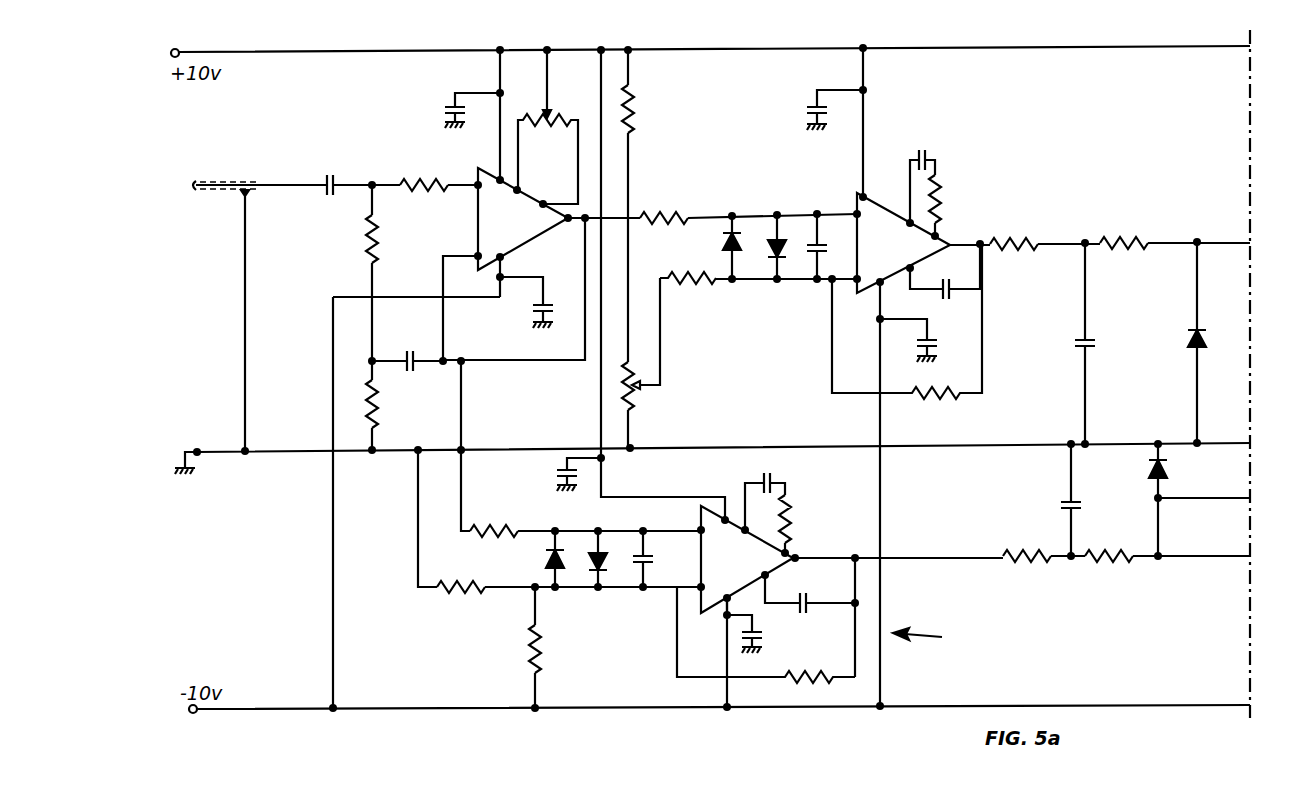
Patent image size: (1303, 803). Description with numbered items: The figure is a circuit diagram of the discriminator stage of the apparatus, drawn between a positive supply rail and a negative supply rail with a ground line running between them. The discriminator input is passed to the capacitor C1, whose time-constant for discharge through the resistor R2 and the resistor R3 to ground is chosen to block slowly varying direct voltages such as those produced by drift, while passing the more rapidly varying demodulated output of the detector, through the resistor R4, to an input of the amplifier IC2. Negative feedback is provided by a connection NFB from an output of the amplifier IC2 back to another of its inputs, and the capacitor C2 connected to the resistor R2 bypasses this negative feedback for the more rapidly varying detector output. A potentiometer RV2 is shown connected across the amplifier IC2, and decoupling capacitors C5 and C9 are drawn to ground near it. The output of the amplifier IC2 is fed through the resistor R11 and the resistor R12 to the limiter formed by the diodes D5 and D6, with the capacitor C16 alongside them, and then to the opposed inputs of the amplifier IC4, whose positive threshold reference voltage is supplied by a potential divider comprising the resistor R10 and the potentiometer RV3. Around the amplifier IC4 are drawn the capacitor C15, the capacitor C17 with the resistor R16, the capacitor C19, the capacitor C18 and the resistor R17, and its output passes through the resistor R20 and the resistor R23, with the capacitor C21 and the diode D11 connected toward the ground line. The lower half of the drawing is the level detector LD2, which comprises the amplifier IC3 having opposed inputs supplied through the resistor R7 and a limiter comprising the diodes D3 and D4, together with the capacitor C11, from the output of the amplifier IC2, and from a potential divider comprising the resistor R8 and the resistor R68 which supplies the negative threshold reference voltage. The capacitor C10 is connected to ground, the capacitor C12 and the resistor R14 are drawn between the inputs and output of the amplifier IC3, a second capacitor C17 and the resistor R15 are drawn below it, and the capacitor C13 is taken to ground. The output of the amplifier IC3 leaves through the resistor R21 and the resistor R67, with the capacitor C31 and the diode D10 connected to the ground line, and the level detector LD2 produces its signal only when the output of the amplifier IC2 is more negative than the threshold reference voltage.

The capacitor C1 is at (327, 179).
The input resistor R4 is at (422, 181).
The resistor R2 is at (366, 244).
The supply decoupling capacitor C5 is at (444, 108).
The offset adjusting potentiometer RV2 is at (548, 159).
The amplifier IC2 is at (523, 219).
The decoupling capacitor C9 is at (550, 304).
The capacitor C2 is at (406, 350).
The resistor R3 is at (380, 404).
The negative feedback connection NFB is at (490, 363).
The resistor R10 is at (633, 96).
The series resistor R11 is at (669, 212).
The series resistor R12 is at (690, 274).
The potentiometer RV3 is at (642, 386).
The diode D5 is at (740, 219).
The diode D6 is at (782, 219).
The capacitor C16 is at (825, 219).
The supply decoupling capacitor C15 is at (809, 103).
The amplifier IC4 is at (903, 243).
The feedback capacitor C17 is at (924, 154).
The feedback resistor R16 is at (942, 188).
The feedback capacitor C19 is at (955, 288).
The decoupling capacitor C18 is at (935, 340).
The feedback resistor R17 is at (940, 397).
The output resistor R20 is at (1016, 238).
The output resistor R23 is at (1124, 238).
The output capacitor C21 is at (1090, 337).
The output diode D11 is at (1202, 328).
The decoupling capacitor C10 is at (558, 476).
The feedback capacitor C12 is at (775, 480).
The feedback resistor R14 is at (790, 526).
The amplifier IC3 is at (747, 559).
The input resistor R7 is at (494, 536).
The resistor R8 is at (457, 592).
The diode D3 is at (560, 565).
The diode D4 is at (604, 568).
The capacitor C11 is at (652, 568).
The resistor R68 is at (541, 653).
The decoupling capacitor C13 is at (762, 635).
The feedback resistor R15 is at (794, 682).
The output capacitor C31 is at (1080, 509).
The output diode D10 is at (1168, 476).
The output resistor R21 is at (1022, 562).
The output resistor R67 is at (1106, 562).
The level detector LD2 is at (939, 640).